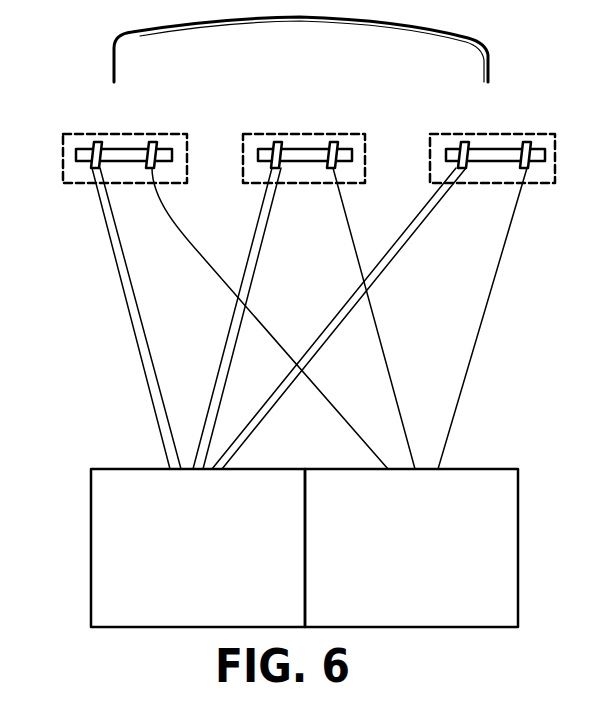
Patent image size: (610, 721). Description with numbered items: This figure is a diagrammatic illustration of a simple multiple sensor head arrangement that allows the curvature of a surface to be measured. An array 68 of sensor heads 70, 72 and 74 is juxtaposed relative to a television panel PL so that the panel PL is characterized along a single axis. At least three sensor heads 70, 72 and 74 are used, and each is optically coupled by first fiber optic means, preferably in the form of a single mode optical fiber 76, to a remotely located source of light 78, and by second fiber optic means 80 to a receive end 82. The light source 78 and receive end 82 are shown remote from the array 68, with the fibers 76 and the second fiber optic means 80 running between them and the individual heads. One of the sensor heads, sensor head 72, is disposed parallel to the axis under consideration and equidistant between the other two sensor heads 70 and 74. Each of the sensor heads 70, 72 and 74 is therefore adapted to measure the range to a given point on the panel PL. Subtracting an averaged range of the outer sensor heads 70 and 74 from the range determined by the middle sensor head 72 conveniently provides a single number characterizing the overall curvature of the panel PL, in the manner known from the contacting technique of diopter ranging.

The television panel PL is at (462, 55).
The array of sensor heads 68 is at (303, 135).
The sensor head 70 is at (88, 134).
The sensor head 72 is at (357, 134).
The sensor head 74 is at (541, 134).
The single mode optical fiber 76 is at (209, 258).
The source of light 78 is at (508, 522).
The second fiber optic means 80 is at (133, 336).
The receive end 82 is at (97, 523).